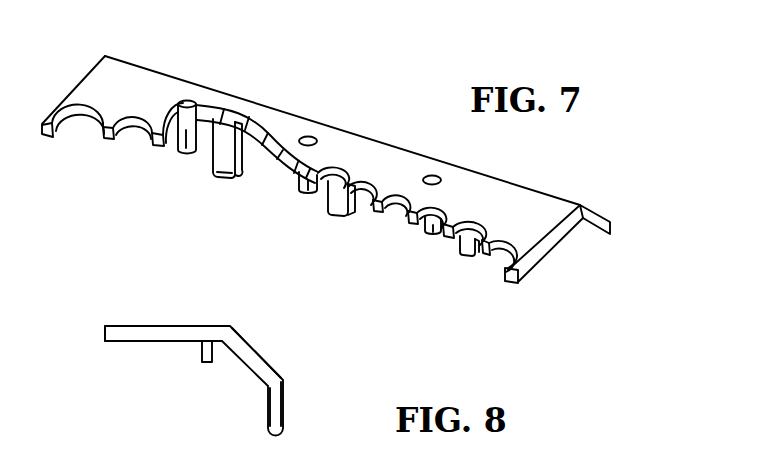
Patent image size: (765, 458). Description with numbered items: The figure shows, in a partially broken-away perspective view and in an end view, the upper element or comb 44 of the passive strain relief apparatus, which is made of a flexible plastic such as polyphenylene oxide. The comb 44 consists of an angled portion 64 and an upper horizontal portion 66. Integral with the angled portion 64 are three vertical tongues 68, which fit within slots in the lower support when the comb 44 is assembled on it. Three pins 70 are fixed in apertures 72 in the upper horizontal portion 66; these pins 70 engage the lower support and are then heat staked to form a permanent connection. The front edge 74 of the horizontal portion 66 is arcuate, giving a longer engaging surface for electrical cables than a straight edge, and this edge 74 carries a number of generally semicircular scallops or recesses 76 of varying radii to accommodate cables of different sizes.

In FIG. 7, the upper element or comb 44 is at (574, 187).
In FIG. 8, the upper element or comb 44 is at (267, 347).
In FIG. 7, the angled portion 64 is at (594, 211).
In FIG. 8, the angled portion 64 is at (260, 377).
In FIG. 7, the upper horizontal portion 66 is at (558, 238).
In FIG. 8, the upper horizontal portion 66 is at (138, 326).
In FIG. 7, the vertical tongues 68 is at (228, 180).
In FIG. 8, the vertical tongues 68 is at (287, 406).
In FIG. 7, the pins 70 is at (185, 153).
In FIG. 8, the pins 70 is at (203, 356).
In FIG. 7, the apertures 72 is at (189, 102).
In FIG. 7, the front edge 74 is at (106, 139).
In FIG. 8, the front edge 74 is at (105, 330).
In FIG. 7, the scallops or recesses 76 is at (500, 264).